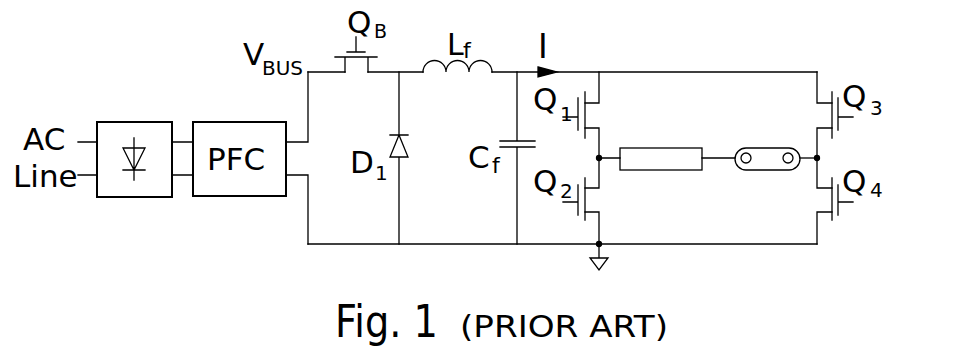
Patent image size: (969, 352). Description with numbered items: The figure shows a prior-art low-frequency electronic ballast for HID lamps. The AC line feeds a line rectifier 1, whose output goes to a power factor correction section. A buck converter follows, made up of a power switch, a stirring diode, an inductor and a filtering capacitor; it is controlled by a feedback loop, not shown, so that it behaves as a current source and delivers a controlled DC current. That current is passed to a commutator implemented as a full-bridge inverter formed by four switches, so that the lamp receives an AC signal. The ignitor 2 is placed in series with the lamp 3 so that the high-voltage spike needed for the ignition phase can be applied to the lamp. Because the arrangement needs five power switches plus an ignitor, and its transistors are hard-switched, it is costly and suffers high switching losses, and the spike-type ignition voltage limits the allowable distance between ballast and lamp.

The line rectifier 1 is at (135, 115).
The ignitor 2 is at (663, 163).
The lamp 3 is at (762, 165).